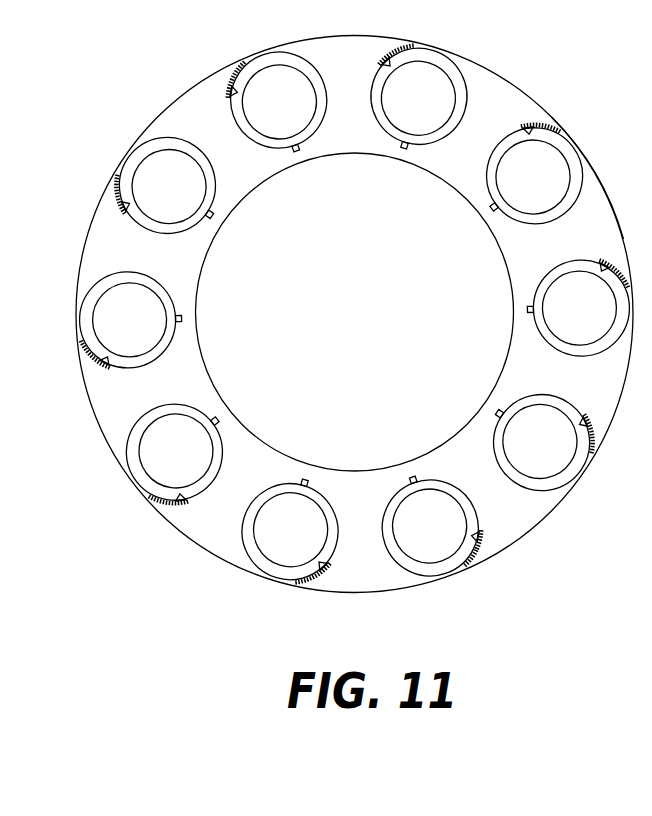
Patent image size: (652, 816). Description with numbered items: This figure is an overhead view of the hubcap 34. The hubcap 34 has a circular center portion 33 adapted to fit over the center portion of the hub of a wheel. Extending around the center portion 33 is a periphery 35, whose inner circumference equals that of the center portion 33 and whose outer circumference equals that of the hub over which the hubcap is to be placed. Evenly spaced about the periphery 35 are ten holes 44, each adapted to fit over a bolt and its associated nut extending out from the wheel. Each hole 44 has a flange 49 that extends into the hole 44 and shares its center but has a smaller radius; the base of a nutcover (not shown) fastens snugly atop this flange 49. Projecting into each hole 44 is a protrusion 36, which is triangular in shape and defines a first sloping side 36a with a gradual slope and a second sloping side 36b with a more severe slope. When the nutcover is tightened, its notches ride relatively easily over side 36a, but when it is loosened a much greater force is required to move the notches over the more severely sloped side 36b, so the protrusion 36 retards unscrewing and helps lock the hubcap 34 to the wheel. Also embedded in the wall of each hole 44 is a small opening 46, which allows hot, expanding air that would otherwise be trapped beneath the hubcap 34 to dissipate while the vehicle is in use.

The center portion 33 is at (440, 190).
The hubcap 34 is at (199, 62).
The periphery 35 is at (590, 197).
The protrusion 36 is at (582, 435).
The first sloping side 36a is at (473, 530).
The second sloping side 36b is at (460, 563).
The hole 44 is at (260, 538).
The opening 46 is at (490, 411).
The flange 49 is at (270, 567).